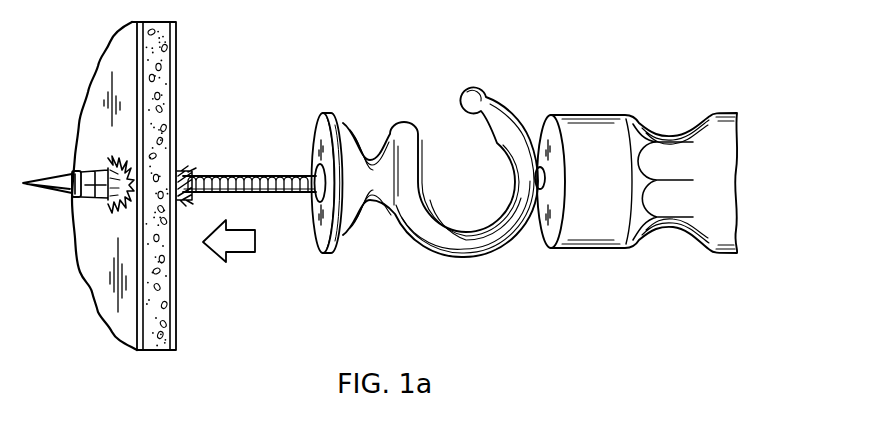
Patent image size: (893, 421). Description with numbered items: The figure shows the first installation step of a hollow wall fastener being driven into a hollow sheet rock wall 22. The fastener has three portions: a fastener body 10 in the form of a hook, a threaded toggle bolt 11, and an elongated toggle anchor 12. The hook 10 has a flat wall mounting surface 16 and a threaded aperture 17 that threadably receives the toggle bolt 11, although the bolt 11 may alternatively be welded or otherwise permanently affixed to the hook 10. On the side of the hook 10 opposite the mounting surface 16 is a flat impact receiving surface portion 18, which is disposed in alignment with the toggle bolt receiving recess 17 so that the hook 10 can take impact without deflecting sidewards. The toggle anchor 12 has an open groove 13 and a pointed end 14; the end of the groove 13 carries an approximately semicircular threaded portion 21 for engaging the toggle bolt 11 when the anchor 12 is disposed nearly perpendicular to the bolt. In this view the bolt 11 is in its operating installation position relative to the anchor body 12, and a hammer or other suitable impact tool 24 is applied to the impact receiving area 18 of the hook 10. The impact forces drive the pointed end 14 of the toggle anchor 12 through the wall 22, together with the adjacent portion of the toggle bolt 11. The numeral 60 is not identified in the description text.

The fastener body 10 is at (492, 254).
The threaded toggle bolt 11 is at (250, 174).
The elongated toggle anchor 12 is at (99, 200).
The open groove 13 is at (190, 174).
The pointed end 14 is at (49, 178).
The flat wall mounting surface 16 is at (321, 127).
The threaded aperture 17 is at (318, 201).
The flat impact receiving surface portion 18 is at (543, 170).
The semicircular threaded portion 21 is at (104, 172).
The hollow sheet rock wall 22 is at (169, 59).
The impact tool 24 is at (600, 115).
The broken wall surface 60 is at (69, 201).